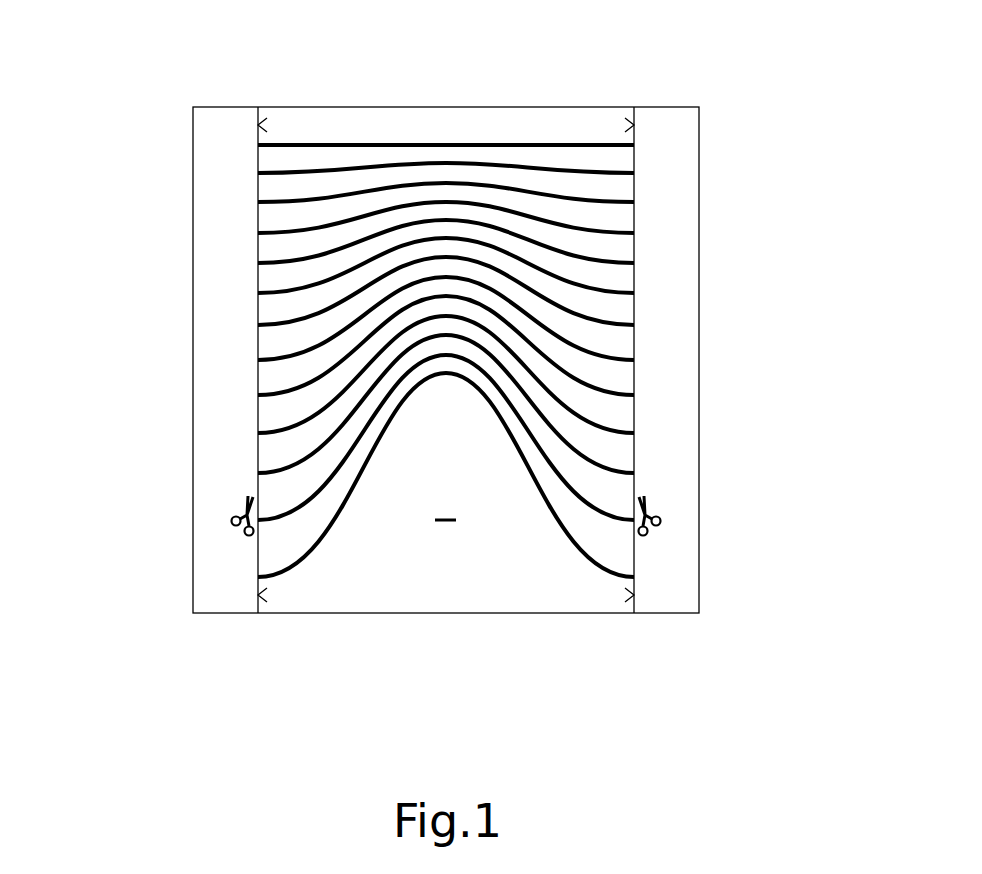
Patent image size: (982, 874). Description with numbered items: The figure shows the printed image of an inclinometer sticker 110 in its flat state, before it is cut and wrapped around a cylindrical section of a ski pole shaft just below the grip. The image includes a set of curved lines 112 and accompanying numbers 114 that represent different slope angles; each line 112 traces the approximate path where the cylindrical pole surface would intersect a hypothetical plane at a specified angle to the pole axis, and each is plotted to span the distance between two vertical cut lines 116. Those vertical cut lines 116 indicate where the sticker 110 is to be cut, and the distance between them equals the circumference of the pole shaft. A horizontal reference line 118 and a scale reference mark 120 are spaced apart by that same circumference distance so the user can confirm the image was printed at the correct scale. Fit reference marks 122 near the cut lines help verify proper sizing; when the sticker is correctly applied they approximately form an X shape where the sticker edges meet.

The sticker 110 is at (125, 258).
The lines 112 is at (625, 357).
The numbers 114 is at (460, 176).
The vertical cut lines 116 is at (258, 551).
The horizontal reference line 118 is at (378, 145).
The scale reference mark 120 is at (447, 525).
The fit reference marks 122 is at (262, 125).